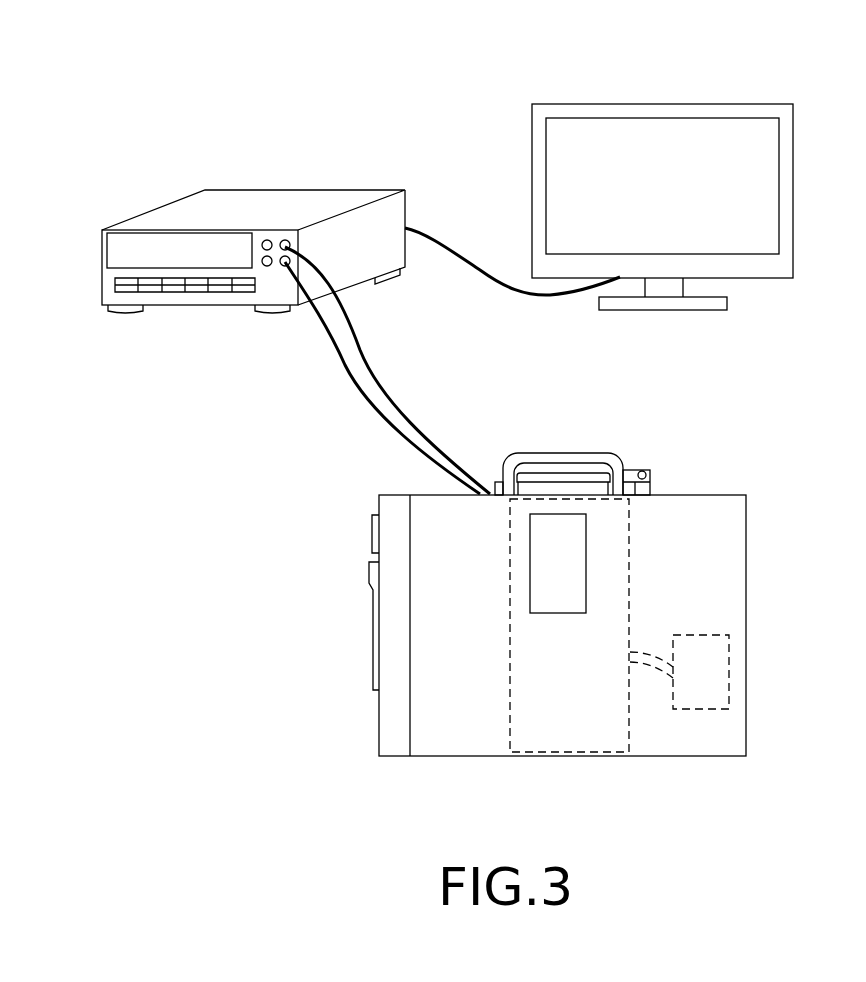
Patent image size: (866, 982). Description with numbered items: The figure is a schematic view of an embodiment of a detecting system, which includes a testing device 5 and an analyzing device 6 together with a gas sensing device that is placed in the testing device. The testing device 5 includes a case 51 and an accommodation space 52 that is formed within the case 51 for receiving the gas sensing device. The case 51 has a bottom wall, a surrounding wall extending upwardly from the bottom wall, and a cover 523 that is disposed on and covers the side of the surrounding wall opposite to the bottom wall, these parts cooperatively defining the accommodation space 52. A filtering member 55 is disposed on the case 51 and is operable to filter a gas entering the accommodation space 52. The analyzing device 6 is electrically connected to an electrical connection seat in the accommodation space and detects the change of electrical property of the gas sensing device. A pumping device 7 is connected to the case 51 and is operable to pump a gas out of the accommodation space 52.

The analyzing device 6 is at (442, 142).
The testing device 5 is at (768, 483).
The case 51 is at (392, 495).
The accommodation space 52 is at (628, 552).
The cover 523 is at (600, 487).
The filtering member 55 is at (564, 587).
The pumping device 7 is at (729, 651).